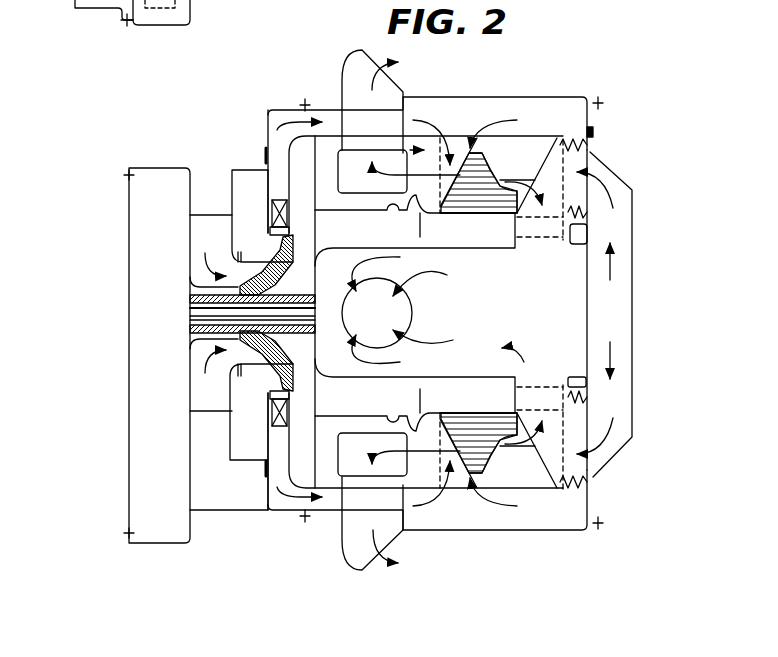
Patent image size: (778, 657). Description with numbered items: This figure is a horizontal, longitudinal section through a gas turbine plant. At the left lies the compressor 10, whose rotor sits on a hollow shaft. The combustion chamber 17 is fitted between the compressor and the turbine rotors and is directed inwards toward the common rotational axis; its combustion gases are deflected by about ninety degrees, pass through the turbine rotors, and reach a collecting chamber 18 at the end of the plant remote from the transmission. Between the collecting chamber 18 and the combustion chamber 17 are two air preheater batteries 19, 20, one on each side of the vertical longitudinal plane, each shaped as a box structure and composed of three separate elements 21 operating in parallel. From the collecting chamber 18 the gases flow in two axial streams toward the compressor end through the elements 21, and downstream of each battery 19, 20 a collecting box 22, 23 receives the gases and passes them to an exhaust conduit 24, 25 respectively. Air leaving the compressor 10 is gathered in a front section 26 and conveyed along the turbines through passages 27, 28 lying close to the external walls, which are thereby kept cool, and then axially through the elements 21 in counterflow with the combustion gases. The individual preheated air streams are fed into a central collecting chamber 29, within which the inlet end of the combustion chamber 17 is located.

The compressor 10 is at (263, 367).
The combustion chamber 17 is at (400, 309).
The collecting chamber 18 is at (617, 300).
The air preheater battery 19 is at (569, 162).
The air preheater battery 20 is at (572, 436).
The elements 21 is at (523, 150).
The collecting box 22 is at (421, 162).
The collecting box 23 is at (427, 460).
The exhaust conduit 24 is at (395, 86).
The exhaust conduit 25 is at (367, 553).
The front section 26 is at (280, 187).
The passage 27 is at (503, 104).
The passage 28 is at (483, 517).
The central collecting chamber 29 is at (560, 334).